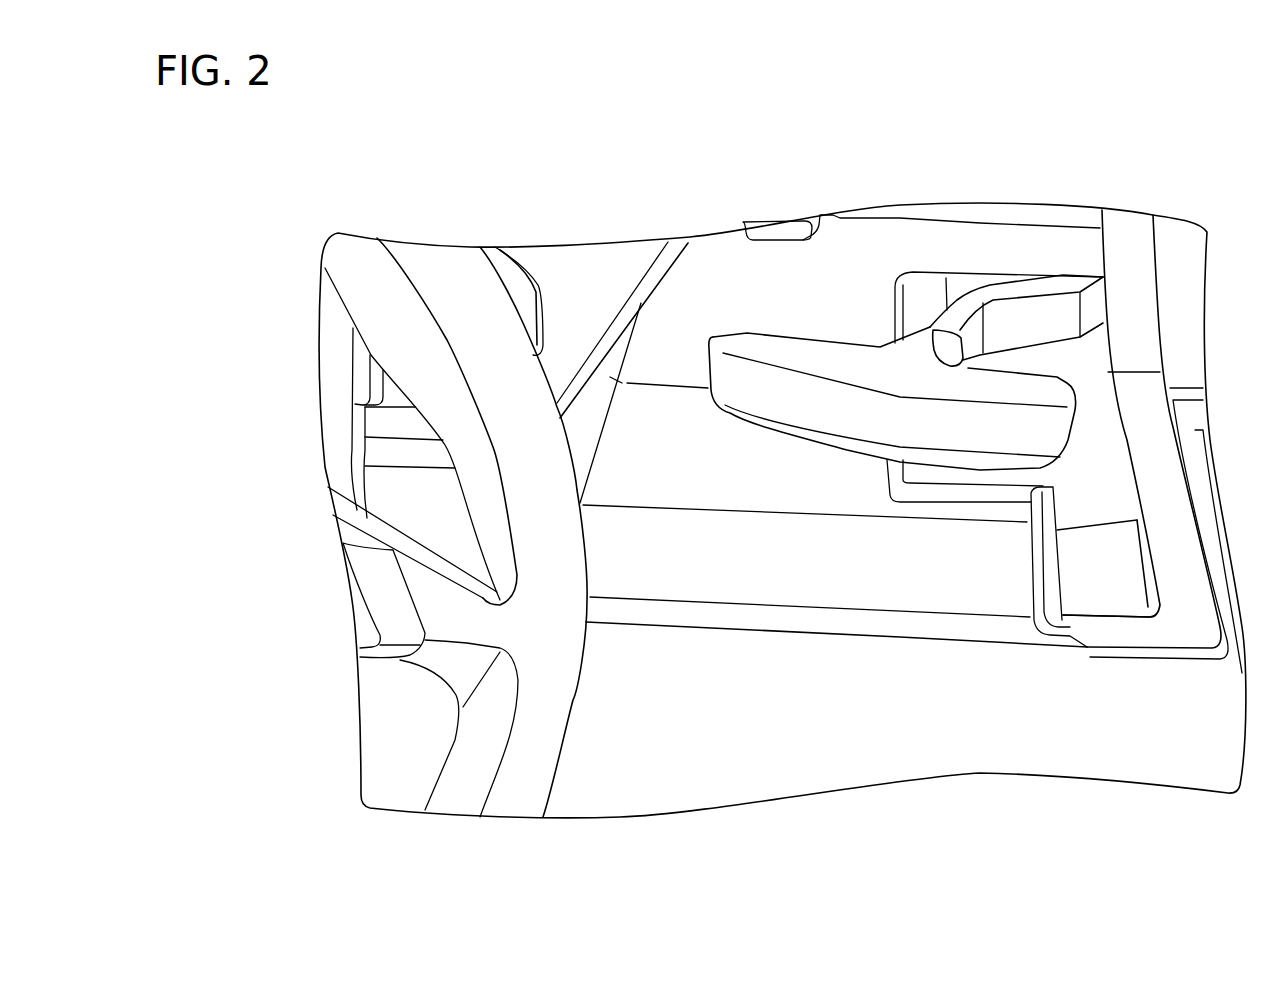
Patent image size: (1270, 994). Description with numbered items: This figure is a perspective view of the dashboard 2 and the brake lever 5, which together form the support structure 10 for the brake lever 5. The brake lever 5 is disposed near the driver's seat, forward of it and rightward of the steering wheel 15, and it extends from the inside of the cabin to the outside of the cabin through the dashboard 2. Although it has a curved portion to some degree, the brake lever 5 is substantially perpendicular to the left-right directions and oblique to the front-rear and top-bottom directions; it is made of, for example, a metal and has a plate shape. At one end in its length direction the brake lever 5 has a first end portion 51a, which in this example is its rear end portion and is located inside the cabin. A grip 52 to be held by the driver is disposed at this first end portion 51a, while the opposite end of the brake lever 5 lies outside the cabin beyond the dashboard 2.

The support structure 10 is at (1097, 158).
The dashboard 2 is at (885, 242).
The steering wheel 15 is at (462, 262).
The grip 52 is at (783, 333).
The brake lever 5 is at (1015, 292).
The first end portion 51a is at (957, 310).